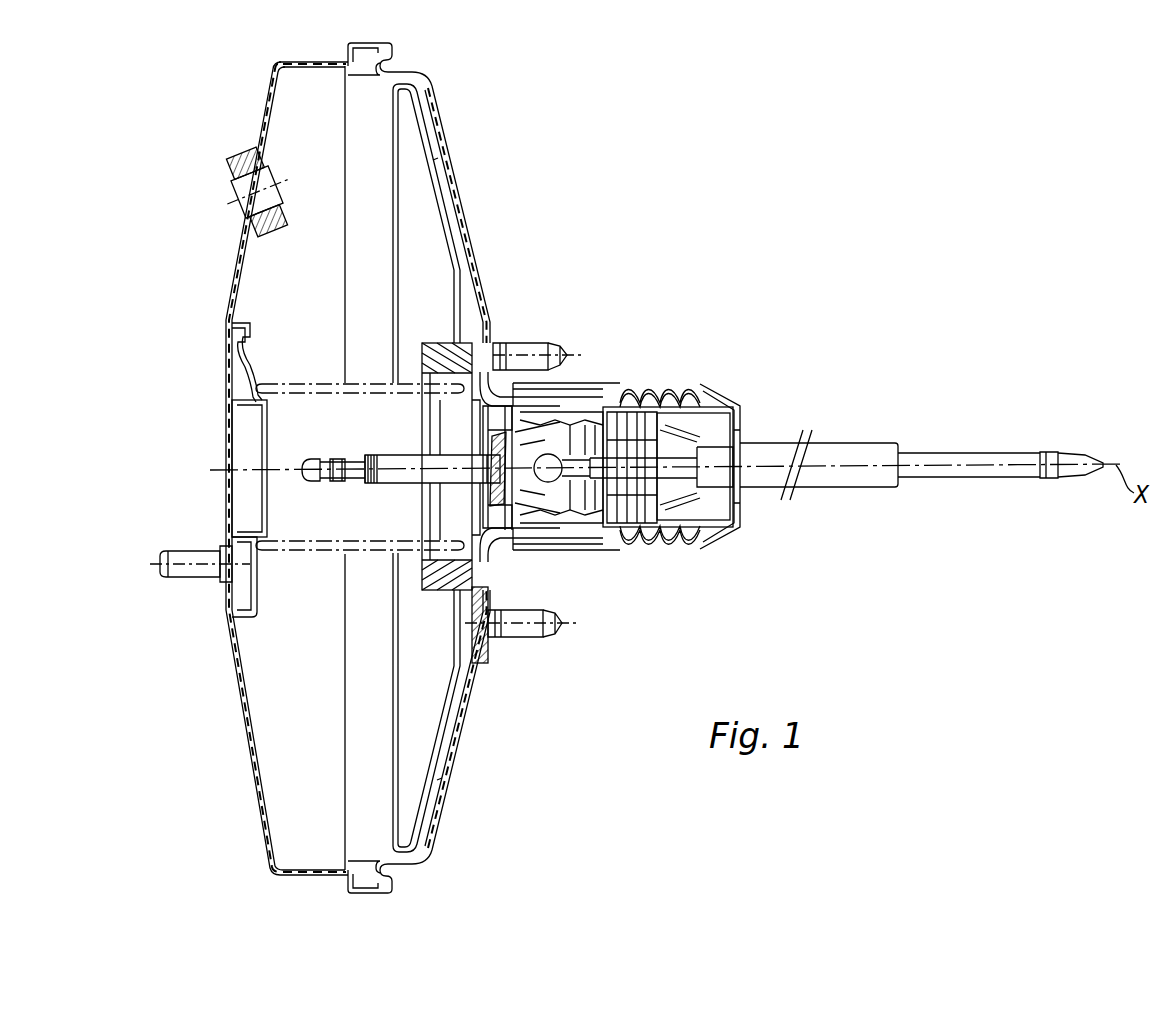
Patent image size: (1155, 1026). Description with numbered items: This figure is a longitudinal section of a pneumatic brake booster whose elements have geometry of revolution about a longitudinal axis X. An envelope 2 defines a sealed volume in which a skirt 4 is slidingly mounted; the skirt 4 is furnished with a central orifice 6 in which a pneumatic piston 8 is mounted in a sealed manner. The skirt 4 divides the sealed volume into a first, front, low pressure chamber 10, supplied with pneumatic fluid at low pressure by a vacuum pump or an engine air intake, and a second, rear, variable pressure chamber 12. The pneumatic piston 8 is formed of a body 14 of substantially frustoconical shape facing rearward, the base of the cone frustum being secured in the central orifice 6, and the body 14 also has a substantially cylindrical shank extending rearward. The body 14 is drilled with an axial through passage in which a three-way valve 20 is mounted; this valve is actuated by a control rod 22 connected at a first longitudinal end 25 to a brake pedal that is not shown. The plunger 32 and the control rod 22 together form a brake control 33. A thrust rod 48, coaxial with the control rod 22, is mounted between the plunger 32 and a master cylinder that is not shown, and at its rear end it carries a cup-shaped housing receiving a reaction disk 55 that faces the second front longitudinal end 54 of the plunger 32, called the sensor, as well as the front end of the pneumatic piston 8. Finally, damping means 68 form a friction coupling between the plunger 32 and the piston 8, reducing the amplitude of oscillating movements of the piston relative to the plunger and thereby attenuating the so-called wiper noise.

The envelope 2 is at (447, 148).
The skirt 4 is at (436, 95).
The central orifice 6 is at (440, 343).
The pneumatic piston 8 is at (492, 558).
The first chamber 10 is at (278, 468).
The second chamber 12 is at (478, 290).
The body 14 is at (530, 396).
The three-way valve 20 is at (626, 536).
The control rod 22 is at (865, 457).
The first longitudinal end 25 is at (1088, 455).
The plunger 32 is at (569, 440).
The brake control 33 is at (648, 447).
The thrust rod 48 is at (387, 490).
The second front longitudinal end 54 is at (307, 487).
The reaction disk 55 is at (499, 507).
The damping means 68 is at (614, 536).